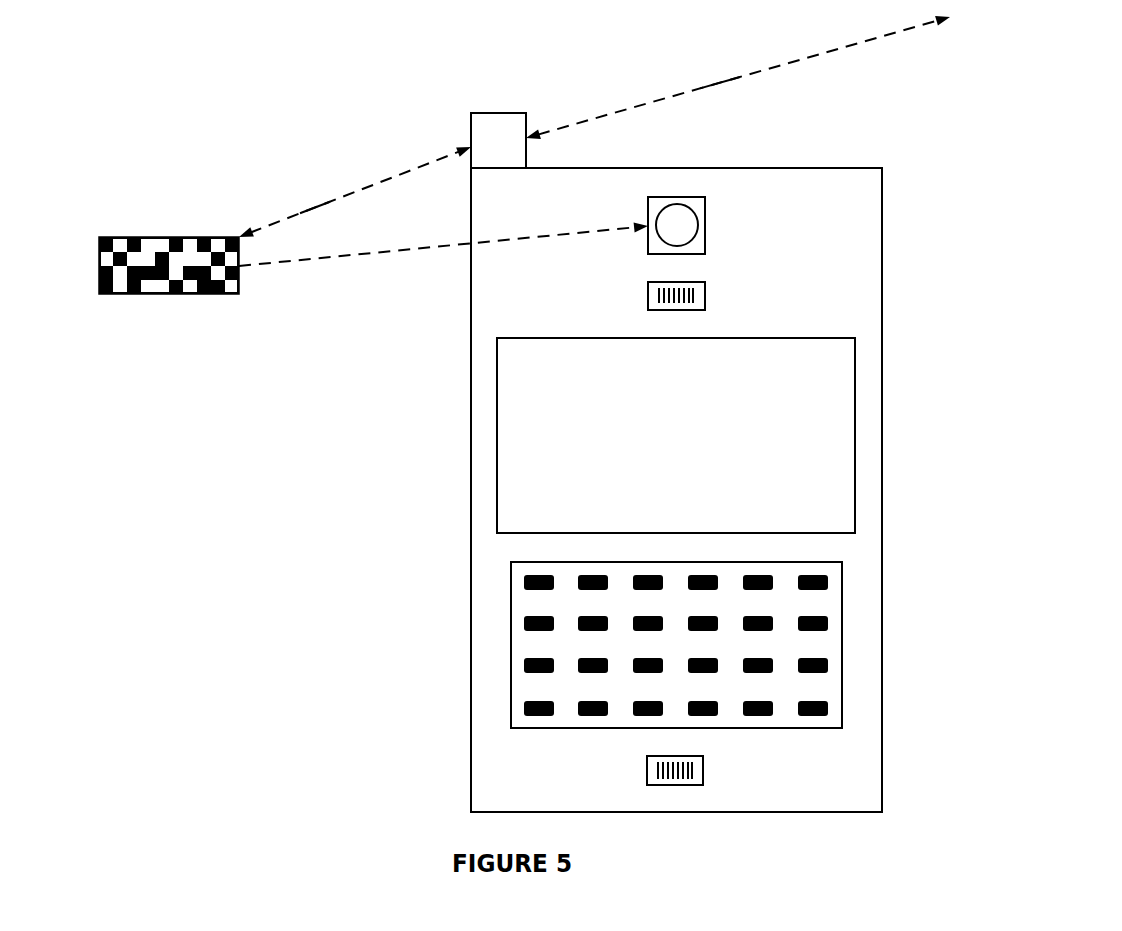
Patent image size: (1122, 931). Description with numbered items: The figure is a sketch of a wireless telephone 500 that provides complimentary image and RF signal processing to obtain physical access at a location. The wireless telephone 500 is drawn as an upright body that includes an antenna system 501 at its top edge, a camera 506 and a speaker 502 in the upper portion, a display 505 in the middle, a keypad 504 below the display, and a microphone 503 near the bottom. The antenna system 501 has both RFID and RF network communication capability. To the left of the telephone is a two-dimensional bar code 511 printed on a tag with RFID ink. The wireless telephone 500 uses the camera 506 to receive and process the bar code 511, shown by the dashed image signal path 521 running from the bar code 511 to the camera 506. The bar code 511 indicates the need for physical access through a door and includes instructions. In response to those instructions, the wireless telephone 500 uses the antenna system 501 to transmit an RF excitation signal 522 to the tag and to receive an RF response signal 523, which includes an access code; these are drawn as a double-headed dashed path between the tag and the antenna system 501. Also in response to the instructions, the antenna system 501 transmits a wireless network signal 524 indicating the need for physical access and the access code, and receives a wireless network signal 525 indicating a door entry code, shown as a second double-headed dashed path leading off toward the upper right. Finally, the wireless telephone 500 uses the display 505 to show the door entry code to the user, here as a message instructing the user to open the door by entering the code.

The wireless telephone 500 is at (1032, 38).
The antenna system 501 is at (486, 113).
The speaker 502 is at (705, 296).
The microphone 503 is at (703, 771).
The keypad 504 is at (580, 728).
The display 505 is at (835, 338).
The camera 506 is at (705, 225).
The two-dimensional bar code 511 is at (99, 270).
The bar code image signal 521 is at (383, 255).
The RF excitation signal 522 is at (356, 186).
The RF response signal 523 is at (315, 208).
The wireless network signal 524 is at (664, 100).
The wireless network signal 525 is at (720, 82).